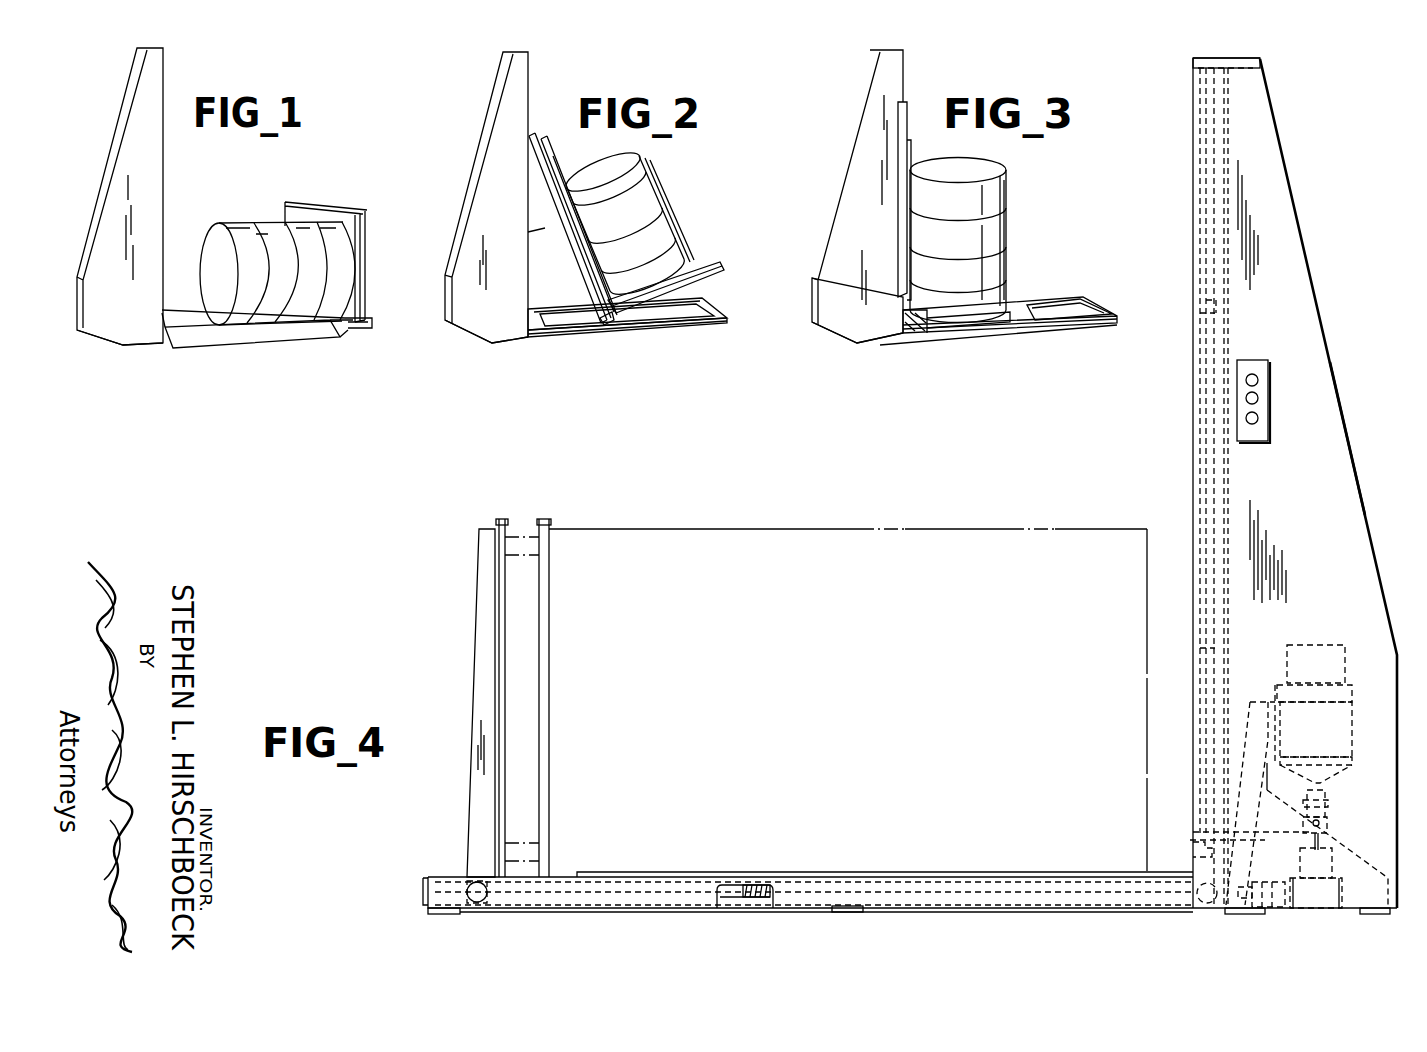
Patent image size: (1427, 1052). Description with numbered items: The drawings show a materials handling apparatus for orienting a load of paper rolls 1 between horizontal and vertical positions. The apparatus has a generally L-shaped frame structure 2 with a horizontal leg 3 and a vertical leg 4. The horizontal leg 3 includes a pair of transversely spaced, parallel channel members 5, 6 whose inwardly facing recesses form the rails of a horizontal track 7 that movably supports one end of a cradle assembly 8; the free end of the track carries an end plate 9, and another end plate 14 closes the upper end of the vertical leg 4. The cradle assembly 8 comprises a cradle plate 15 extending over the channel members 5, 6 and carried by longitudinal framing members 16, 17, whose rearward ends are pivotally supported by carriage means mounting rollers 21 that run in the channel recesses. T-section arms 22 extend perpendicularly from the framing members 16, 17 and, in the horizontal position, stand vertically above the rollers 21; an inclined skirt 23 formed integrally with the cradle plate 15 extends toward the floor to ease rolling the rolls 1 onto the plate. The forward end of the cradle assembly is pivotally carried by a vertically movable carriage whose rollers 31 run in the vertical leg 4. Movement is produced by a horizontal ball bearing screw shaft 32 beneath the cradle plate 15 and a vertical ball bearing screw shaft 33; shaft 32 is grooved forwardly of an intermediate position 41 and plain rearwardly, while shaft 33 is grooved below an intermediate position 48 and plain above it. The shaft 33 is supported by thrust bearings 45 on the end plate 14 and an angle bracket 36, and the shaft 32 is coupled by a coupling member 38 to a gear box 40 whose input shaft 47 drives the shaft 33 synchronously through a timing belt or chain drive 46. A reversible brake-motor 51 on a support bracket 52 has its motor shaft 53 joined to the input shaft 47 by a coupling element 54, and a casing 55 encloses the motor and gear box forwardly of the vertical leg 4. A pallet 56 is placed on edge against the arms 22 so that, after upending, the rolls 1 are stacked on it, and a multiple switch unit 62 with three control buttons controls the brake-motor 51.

In FIG. 1, the rolls of paper 1 is at (300, 333).
In FIG. 2, the rolls of paper 1 is at (655, 220).
In FIG. 3, the rolls of paper 1 is at (995, 278).
In FIG. 4, the rolls of paper 1 is at (870, 535).
In FIG. 1, the frame structure 2 is at (100, 346).
In FIG. 2, the frame structure 2 is at (463, 339).
In FIG. 3, the frame structure 2 is at (830, 331).
In FIG. 4, the frame structure 2 is at (1398, 912).
In FIG. 1, the horizontal leg 3 is at (356, 330).
In FIG. 2, the horizontal leg 3 is at (641, 330).
In FIG. 3, the horizontal leg 3 is at (1075, 328).
In FIG. 4, the horizontal leg 3 is at (977, 901).
In FIG. 1, the vertical leg 4 is at (166, 84).
In FIG. 2, the vertical leg 4 is at (530, 72).
In FIG. 3, the vertical leg 4 is at (908, 69).
In FIG. 4, the vertical leg 4 is at (1283, 127).
In FIG. 2, the channel member 5 is at (552, 338).
In FIG. 3, the channel member 5 is at (1100, 328).
In FIG. 2, the channel member 6 is at (557, 313).
In FIG. 3, the channel member 6 is at (1062, 304).
In FIG. 4, the channel member 6 is at (808, 878).
In FIG. 4, the horizontal track 7 is at (812, 906).
In FIG. 2, the cradle assembly 8 is at (549, 231).
In FIG. 2, the end plate 9 is at (705, 313).
In FIG. 3, the end plate 9 is at (1100, 314).
In FIG. 4, the end plate 9 is at (428, 879).
In FIG. 4, the end plate 14 is at (1240, 62).
In FIG. 1, the cradle plate 15 is at (172, 320).
In FIG. 2, the cradle plate 15 is at (547, 142).
In FIG. 3, the cradle plate 15 is at (912, 150).
In FIG. 4, the cradle plate 15 is at (966, 872).
In FIG. 2, the framing member 16 is at (606, 323).
In FIG. 2, the framing member 17 is at (573, 250).
In FIG. 4, the rollers 21 is at (477, 906).
In FIG. 4, the T-section arms 22 is at (482, 631).
In FIG. 1, the inclined skirt 23 is at (230, 343).
In FIG. 2, the inclined skirt 23 is at (555, 170).
In FIG. 3, the inclined skirt 23 is at (906, 212).
In FIG. 4, the rollers 31 is at (1202, 905).
In FIG. 4, the horizontal ball bearing screw shaft 32 is at (760, 884).
In FIG. 4, the vertical ball bearing screw shaft 33 is at (1207, 347).
In FIG. 4, the angle bracket 36 is at (1236, 872).
In FIG. 4, the coupling member 38 is at (1262, 912).
In FIG. 4, the gear box 40 is at (1310, 910).
In FIG. 4, the intermediate position 41 is at (740, 885).
In FIG. 4, the thrust bearings 45 is at (1196, 850).
In FIG. 4, the timing belt or chain drive 46 is at (1270, 832).
In FIG. 4, the input shaft 47 is at (1327, 823).
In FIG. 4, the intermediate position 48 is at (1214, 305).
In FIG. 4, the reversible brake-motor 51 is at (1345, 700).
In FIG. 4, the support bracket 52 is at (1268, 700).
In FIG. 4, the motor shaft 53 is at (1318, 788).
In FIG. 4, the coupling element 54 is at (1330, 805).
In FIG. 1, the casing 55 is at (127, 157).
In FIG. 2, the casing 55 is at (490, 146).
In FIG. 3, the casing 55 is at (860, 178).
In FIG. 4, the casing 55 is at (1345, 494).
In FIG. 1, the pallet 56 is at (310, 203).
In FIG. 2, the pallet 56 is at (700, 262).
In FIG. 3, the pallet 56 is at (985, 322).
In FIG. 4, the pallet 56 is at (543, 519).
In FIG. 4, the multiple switch unit 62 is at (1262, 405).